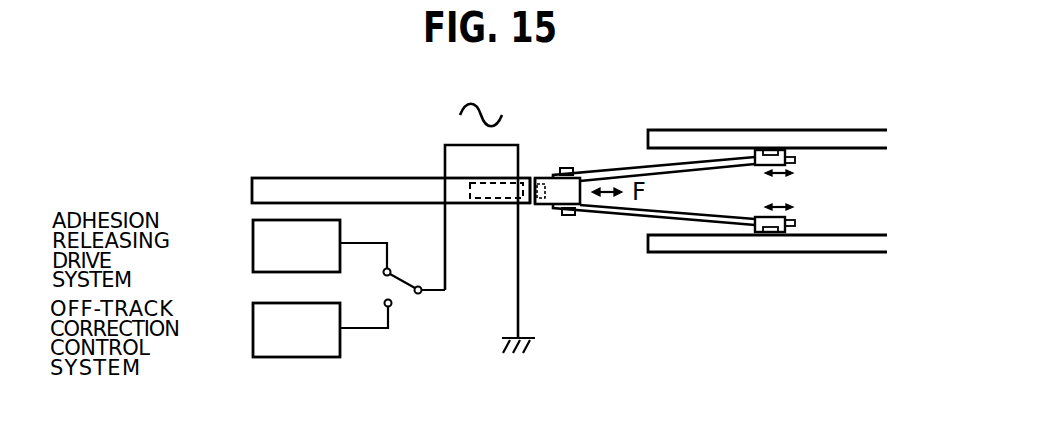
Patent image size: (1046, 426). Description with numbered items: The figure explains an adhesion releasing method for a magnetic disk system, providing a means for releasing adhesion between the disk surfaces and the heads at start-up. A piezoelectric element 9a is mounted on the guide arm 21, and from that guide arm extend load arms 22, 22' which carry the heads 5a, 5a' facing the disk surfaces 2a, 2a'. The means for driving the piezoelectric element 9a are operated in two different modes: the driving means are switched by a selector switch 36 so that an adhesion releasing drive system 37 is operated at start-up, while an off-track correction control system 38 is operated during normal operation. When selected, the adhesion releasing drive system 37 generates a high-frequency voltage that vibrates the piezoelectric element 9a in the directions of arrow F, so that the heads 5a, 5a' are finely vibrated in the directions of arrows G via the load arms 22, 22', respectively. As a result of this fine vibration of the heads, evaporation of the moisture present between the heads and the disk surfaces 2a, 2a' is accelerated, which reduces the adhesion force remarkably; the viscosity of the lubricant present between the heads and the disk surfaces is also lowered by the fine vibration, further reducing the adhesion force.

The guide arm 21 is at (303, 178).
The piezoelectric element 9a is at (521, 188).
The load arm 22 is at (654, 140).
The load arm 22' is at (654, 242).
The head 5a is at (828, 172).
The head 5a' is at (831, 213).
The disk surface 2a is at (767, 109).
The disk surface 2a' is at (767, 278).
The adhesion releasing drive system 37 is at (253, 252).
The off-track correction control system 38 is at (253, 341).
The selector switch 36 is at (400, 292).